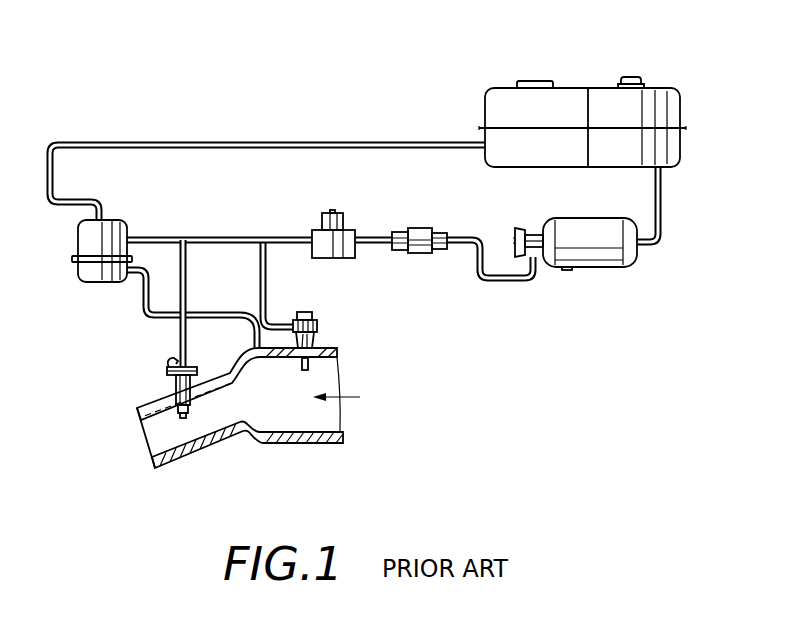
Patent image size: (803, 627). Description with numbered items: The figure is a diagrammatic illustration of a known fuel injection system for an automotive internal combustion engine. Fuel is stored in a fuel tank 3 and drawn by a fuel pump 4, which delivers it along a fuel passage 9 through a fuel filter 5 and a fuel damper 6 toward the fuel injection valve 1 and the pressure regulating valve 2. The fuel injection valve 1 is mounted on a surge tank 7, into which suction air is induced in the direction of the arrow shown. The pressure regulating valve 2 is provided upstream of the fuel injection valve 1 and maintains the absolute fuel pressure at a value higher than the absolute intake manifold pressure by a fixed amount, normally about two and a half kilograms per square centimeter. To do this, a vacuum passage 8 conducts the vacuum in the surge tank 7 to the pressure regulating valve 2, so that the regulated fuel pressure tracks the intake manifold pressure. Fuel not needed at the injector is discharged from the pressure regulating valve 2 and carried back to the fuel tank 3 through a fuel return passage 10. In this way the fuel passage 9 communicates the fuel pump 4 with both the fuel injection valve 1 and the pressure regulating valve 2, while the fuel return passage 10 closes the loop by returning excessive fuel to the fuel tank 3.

The fuel injection valve 1 is at (172, 393).
The pressure regulating valve 2 is at (83, 285).
The fuel tank 3 is at (577, 88).
The fuel pump 4 is at (597, 268).
The fuel filter 5 is at (420, 254).
The fuel damper 6 is at (340, 259).
The surge tank 7 is at (296, 422).
The vacuum passage 8 is at (211, 310).
The fuel passage 9 is at (243, 236).
The fuel return passage 10 is at (316, 141).